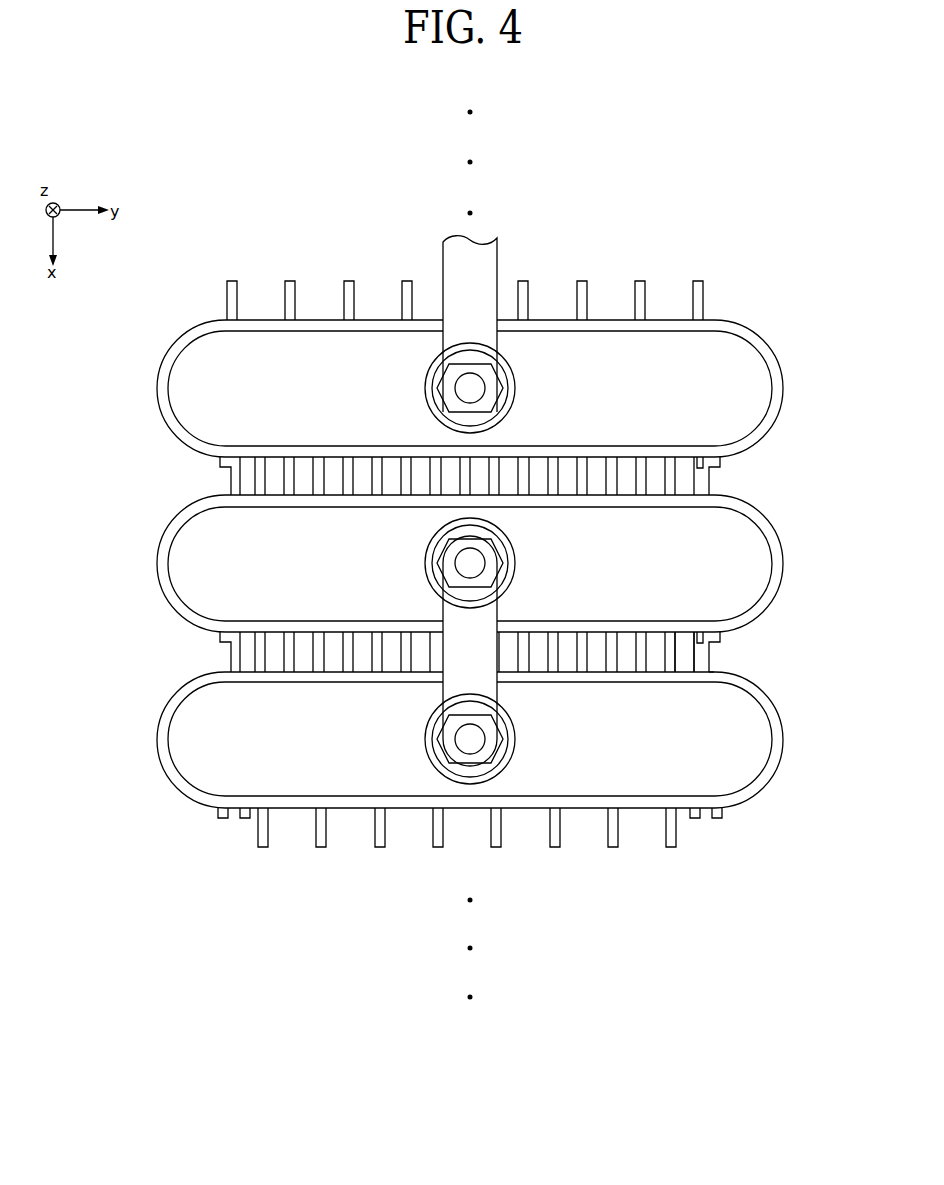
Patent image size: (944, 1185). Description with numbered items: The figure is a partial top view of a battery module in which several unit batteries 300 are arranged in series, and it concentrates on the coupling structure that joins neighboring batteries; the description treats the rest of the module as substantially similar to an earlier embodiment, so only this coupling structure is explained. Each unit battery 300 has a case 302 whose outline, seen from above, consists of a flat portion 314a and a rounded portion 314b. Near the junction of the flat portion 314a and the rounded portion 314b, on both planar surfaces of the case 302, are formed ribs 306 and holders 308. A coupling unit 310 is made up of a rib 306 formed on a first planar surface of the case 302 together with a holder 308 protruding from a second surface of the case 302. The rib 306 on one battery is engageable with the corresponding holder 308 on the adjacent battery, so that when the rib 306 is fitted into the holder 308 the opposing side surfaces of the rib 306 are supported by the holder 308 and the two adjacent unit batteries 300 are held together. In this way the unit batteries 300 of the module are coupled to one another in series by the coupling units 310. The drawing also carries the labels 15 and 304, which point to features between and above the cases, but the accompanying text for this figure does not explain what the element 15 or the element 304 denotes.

The heat radiating fins 15 is at (581, 281).
The unit battery 300 is at (466, 523).
The case 302 is at (778, 768).
The fin 304 is at (640, 640).
The rib 306 is at (700, 660).
The holder 308 is at (712, 640).
The coupling unit 310 is at (724, 652).
The flat portion 314a is at (684, 494).
The rounded portion 314b is at (782, 538).